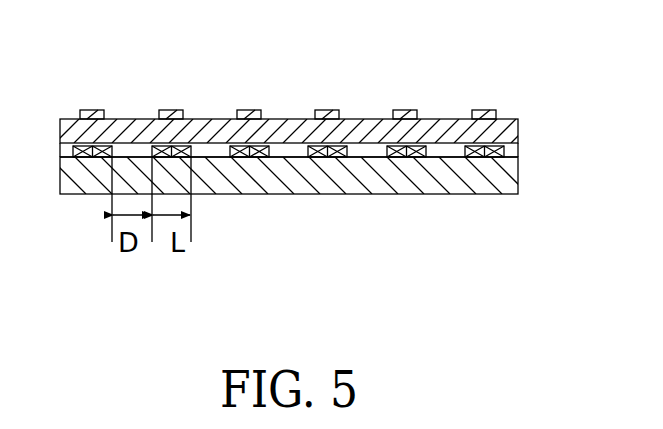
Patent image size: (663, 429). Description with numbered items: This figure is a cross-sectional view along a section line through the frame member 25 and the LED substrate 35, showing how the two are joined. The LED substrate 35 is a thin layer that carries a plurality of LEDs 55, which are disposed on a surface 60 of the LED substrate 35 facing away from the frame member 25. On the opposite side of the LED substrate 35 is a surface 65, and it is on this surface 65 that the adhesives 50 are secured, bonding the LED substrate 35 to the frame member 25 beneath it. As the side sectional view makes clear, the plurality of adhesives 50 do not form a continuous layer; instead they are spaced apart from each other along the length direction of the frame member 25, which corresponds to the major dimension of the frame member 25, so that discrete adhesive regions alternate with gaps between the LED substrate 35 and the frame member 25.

The frame member 25 is at (514, 186).
The LED substrate 35 is at (315, 99).
The adhesives 50 is at (294, 146).
The LEDs 55 is at (403, 110).
The surface 60 is at (130, 119).
The surface 65 is at (289, 200).